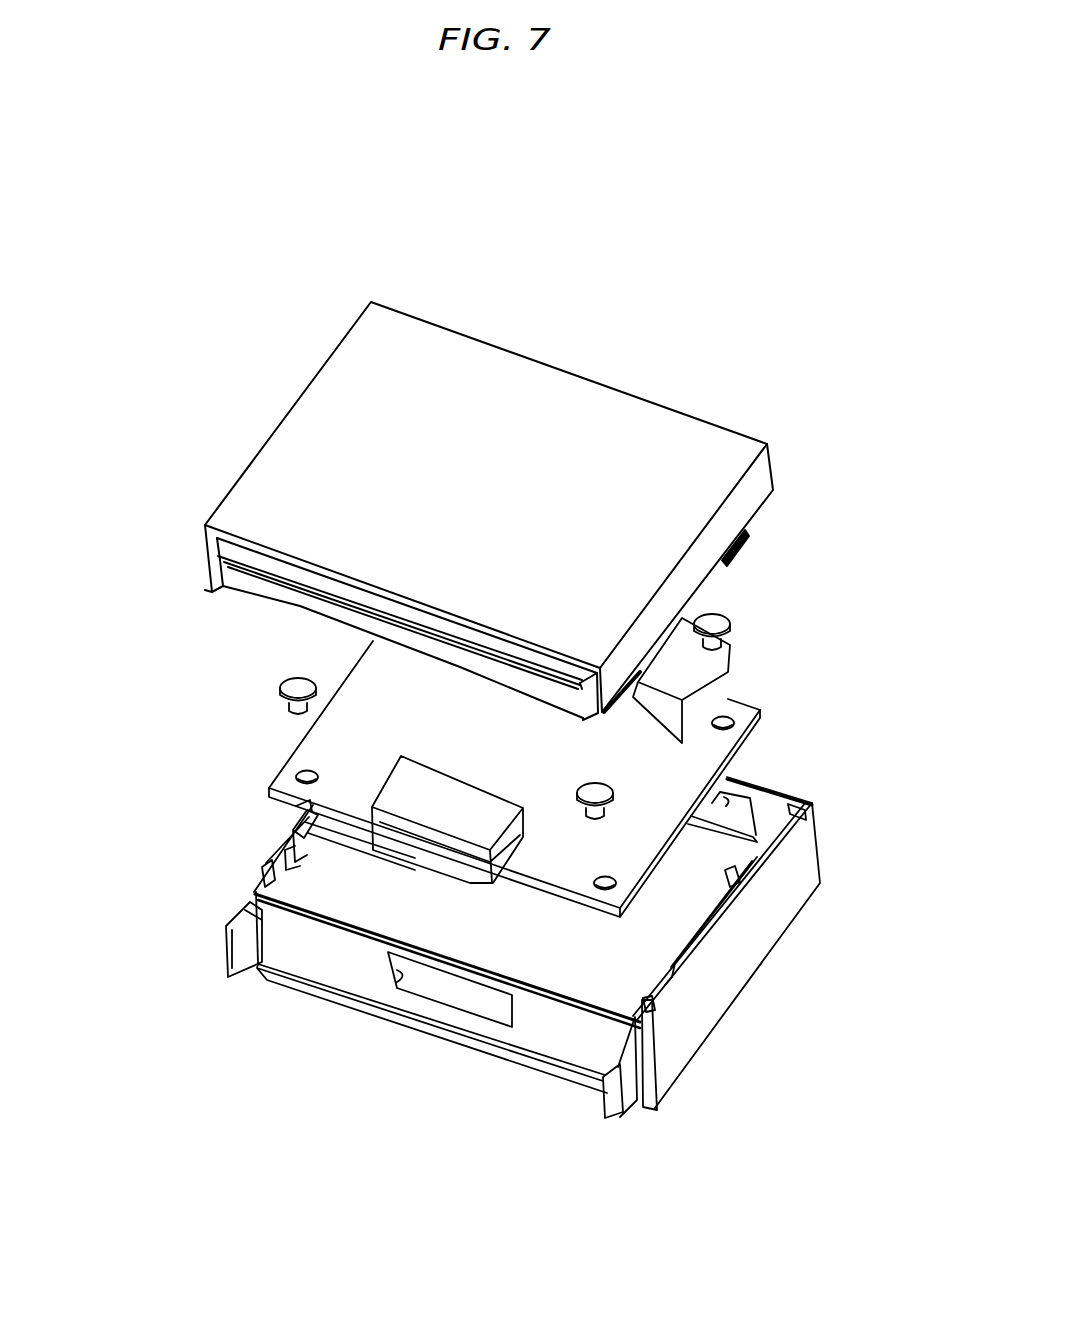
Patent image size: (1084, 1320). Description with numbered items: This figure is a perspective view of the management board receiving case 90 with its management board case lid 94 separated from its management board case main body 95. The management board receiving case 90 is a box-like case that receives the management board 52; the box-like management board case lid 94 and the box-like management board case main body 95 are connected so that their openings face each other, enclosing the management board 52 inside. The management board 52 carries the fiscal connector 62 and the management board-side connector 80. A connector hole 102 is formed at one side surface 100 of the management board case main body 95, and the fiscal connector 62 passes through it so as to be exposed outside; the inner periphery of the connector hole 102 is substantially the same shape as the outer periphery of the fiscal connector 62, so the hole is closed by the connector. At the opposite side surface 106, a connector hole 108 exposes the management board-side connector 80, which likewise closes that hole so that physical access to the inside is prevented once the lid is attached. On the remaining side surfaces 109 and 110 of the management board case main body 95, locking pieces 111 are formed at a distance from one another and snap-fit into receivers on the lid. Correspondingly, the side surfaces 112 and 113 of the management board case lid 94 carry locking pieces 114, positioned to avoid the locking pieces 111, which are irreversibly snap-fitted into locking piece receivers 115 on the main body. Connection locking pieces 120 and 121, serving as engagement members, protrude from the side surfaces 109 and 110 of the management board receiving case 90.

The management board receiving case 90 is at (585, 242).
The management board case lid 94 is at (472, 548).
The side surface of the management board case lid 112 is at (752, 505).
The side surface of the management board case lid 113 is at (204, 545).
The locking pieces 114 is at (733, 550).
The management board 52 is at (318, 752).
The fiscal connector 62 is at (735, 655).
The management board-side connector 80 is at (432, 875).
The side surface of the management board case main body 100 is at (519, 952).
The management board case main body 95 is at (576, 981).
The side surface of the management board case main body 106 is at (431, 1026).
The connector hole 108 is at (407, 987).
The side surface of the management board case main body 109 is at (768, 905).
The connector hole 102 is at (738, 775).
The side surface of the management board case main body 110 is at (300, 826).
The locking pieces 111 is at (300, 812).
The locking piece receivers 115 is at (285, 855).
The connection locking piece 120 is at (610, 1110).
The connection locking piece 121 is at (243, 965).